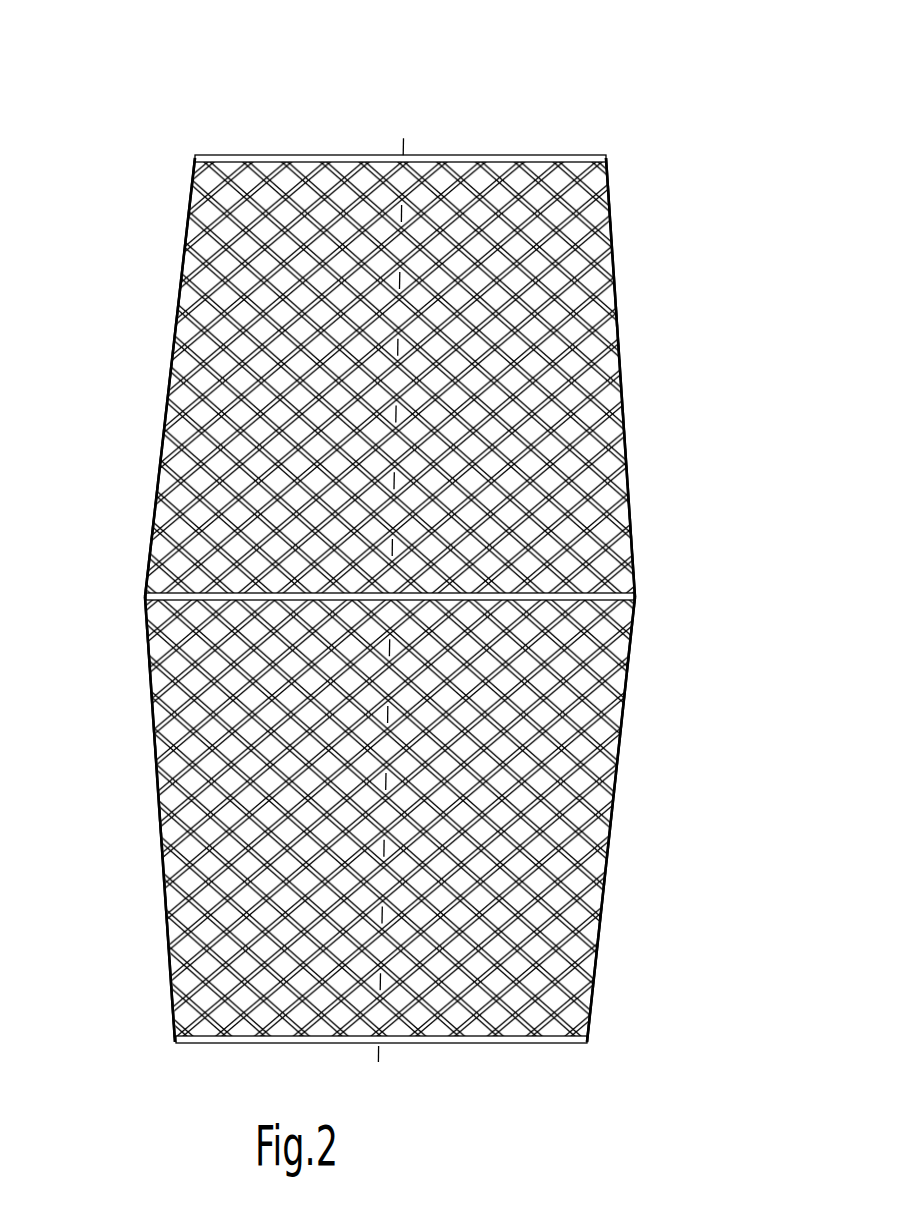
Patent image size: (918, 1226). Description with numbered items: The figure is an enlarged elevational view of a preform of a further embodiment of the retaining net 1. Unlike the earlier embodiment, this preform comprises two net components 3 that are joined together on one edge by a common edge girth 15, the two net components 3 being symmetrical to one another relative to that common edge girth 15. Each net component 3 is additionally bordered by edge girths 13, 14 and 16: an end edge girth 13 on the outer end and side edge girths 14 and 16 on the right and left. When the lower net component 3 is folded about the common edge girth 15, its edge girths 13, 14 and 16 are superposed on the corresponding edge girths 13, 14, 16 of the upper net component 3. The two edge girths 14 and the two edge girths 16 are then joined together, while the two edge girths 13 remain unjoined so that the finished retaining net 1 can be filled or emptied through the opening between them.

The retaining net 1 is at (705, 253).
The net component 3 is at (463, 432).
The edge girth 13 is at (478, 156).
The edge girth 14 is at (626, 497).
The common edge girth 15 is at (258, 600).
The edge girth 16 is at (166, 412).